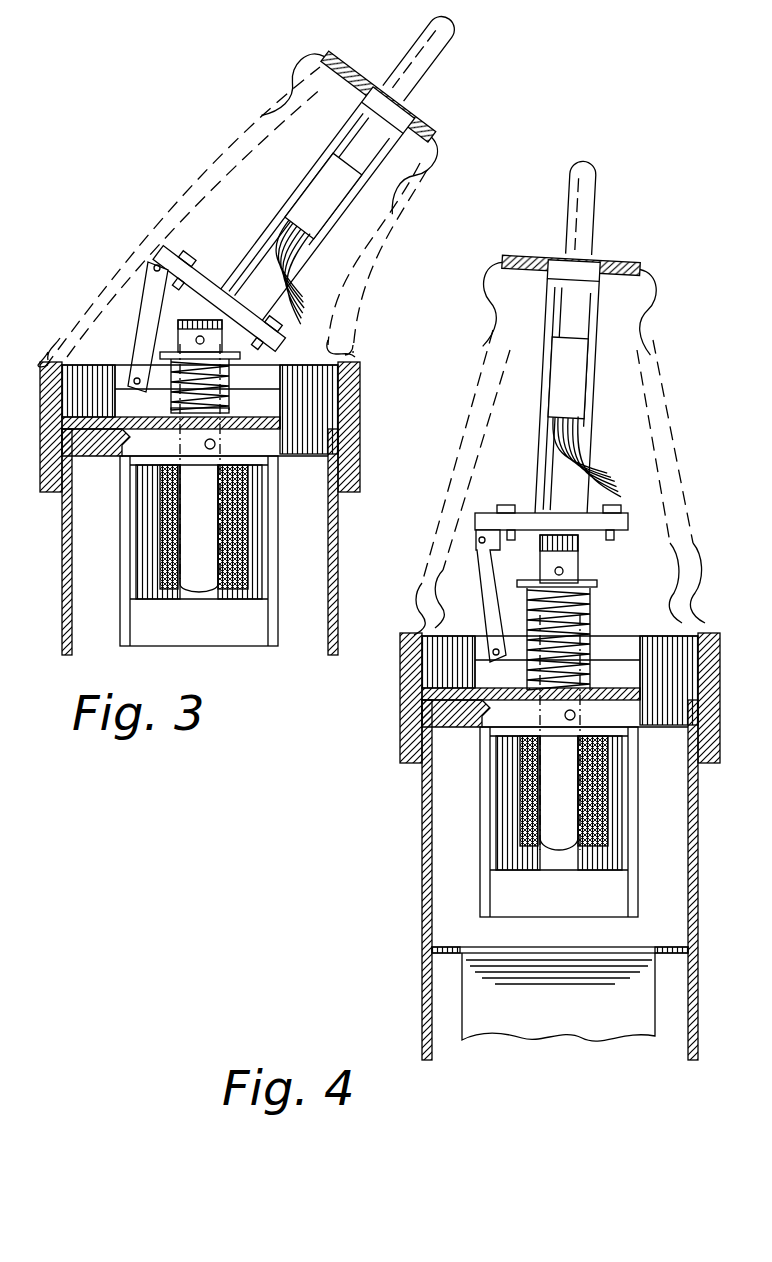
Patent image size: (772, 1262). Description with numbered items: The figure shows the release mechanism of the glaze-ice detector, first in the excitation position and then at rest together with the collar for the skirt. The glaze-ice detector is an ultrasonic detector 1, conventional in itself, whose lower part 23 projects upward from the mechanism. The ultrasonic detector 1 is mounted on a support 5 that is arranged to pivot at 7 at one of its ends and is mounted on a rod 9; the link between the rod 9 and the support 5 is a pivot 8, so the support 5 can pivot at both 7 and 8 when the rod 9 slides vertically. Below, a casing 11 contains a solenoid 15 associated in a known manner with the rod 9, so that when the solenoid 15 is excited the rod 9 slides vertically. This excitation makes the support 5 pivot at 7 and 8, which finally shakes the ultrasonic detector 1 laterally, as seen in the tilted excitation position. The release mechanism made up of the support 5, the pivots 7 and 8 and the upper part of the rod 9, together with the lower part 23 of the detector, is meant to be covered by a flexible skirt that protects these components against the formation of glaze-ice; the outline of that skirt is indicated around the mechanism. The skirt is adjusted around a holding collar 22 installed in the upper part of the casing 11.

In FIG. 3, the ultrasonic detector 1 is at (418, 114).
In FIG. 4, the ultrasonic detector 1 is at (606, 257).
In FIG. 3, the support 5 is at (263, 330).
In FIG. 4, the support 5 is at (612, 527).
In FIG. 3, the pivot 7 is at (172, 247).
In FIG. 4, the pivot 7 is at (478, 540).
In FIG. 3, the pivot 8 is at (212, 340).
In FIG. 4, the pivot 8 is at (575, 570).
In FIG. 3, the rod 9 is at (215, 372).
In FIG. 4, the rod 9 is at (575, 618).
In FIG. 3, the casing 11 is at (232, 542).
In FIG. 3, the solenoid 15 is at (226, 532).
In FIG. 4, the solenoid 15 is at (515, 806).
In FIG. 4, the holding collar 22 is at (400, 716).
In FIG. 3, the lower part of the detector 23 is at (378, 162).
In FIG. 4, the lower part of the detector 23 is at (605, 322).